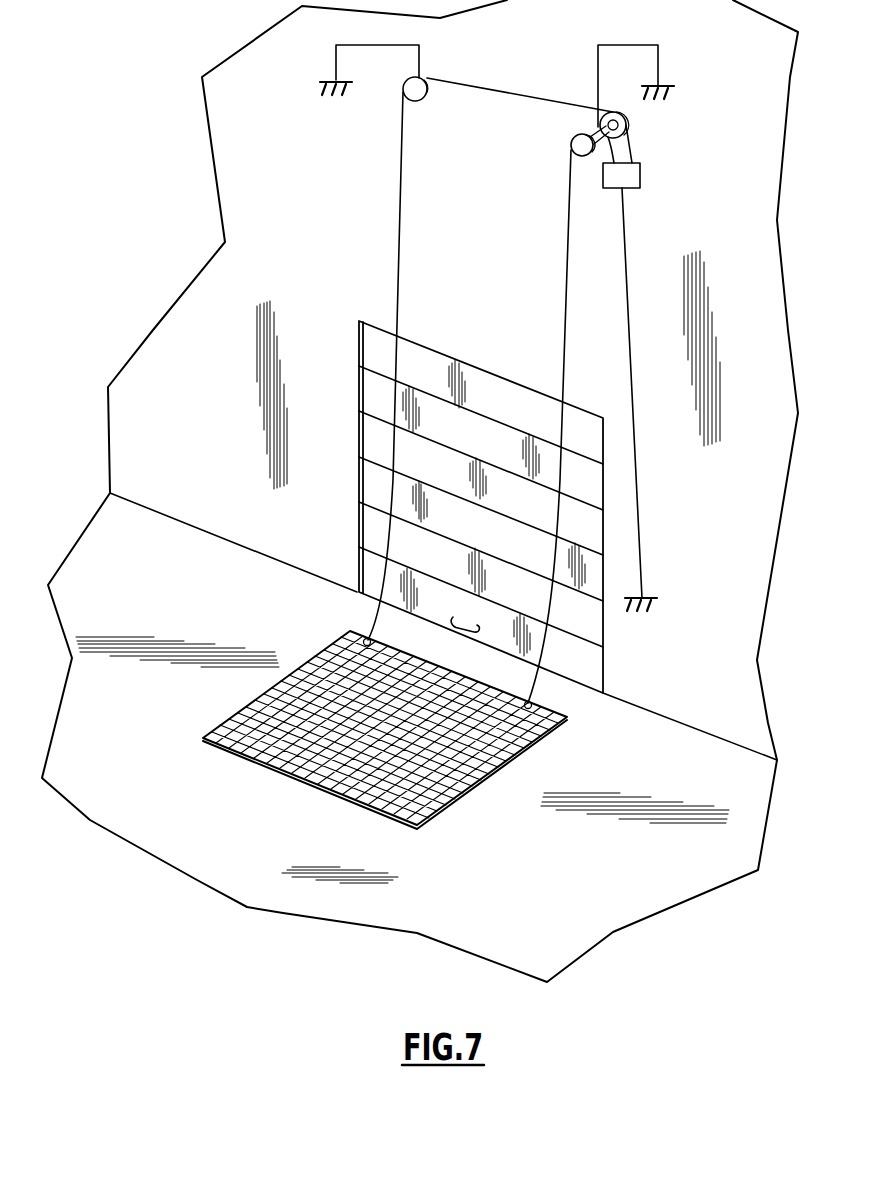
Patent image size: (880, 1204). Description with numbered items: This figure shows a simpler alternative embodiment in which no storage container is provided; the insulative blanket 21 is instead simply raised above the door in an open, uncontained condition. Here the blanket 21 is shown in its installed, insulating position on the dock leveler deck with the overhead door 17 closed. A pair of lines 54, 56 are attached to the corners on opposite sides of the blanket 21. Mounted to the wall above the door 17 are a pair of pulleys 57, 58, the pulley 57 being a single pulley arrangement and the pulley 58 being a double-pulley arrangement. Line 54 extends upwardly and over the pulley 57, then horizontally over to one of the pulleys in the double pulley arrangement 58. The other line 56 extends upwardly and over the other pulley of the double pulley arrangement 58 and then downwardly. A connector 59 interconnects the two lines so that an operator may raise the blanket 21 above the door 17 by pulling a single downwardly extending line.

The overhead door 17 is at (459, 570).
The insulative blanket 21 is at (443, 777).
The line 54 is at (396, 263).
The line 56 is at (565, 331).
The pulley 57 is at (423, 100).
The double-pulley arrangement 58 is at (572, 143).
The connector 59 is at (622, 190).